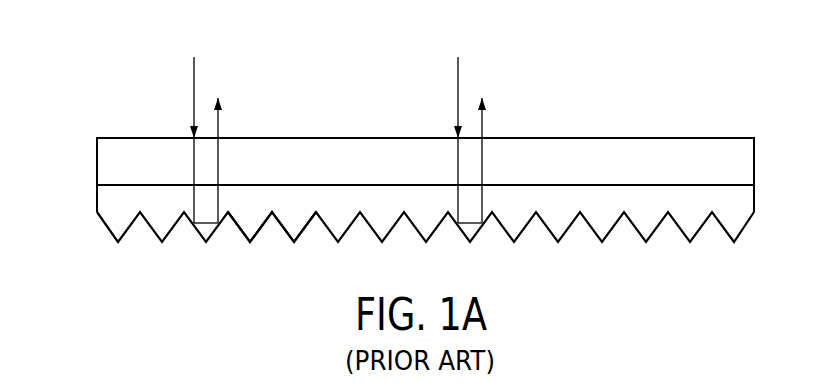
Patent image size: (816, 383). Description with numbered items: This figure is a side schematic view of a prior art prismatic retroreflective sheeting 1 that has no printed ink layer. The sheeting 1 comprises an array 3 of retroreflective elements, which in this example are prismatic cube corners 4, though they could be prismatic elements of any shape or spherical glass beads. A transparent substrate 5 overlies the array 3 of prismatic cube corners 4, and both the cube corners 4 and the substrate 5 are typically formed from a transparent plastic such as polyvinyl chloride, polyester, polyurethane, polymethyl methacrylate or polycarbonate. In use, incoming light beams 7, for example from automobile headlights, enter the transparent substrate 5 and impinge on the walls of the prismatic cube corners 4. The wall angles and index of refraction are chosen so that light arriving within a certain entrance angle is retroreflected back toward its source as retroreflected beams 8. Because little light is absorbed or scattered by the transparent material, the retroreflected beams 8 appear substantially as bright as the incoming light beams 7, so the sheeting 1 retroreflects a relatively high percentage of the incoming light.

The prismatic retroreflective sheeting 1 is at (396, 109).
The array of retroreflective elements 3 is at (115, 228).
The prismatic cube corners 4 is at (253, 228).
The transparent substrate 5 is at (105, 158).
The incoming light beams 7 is at (457, 83).
The retroreflected beams 8 is at (483, 118).